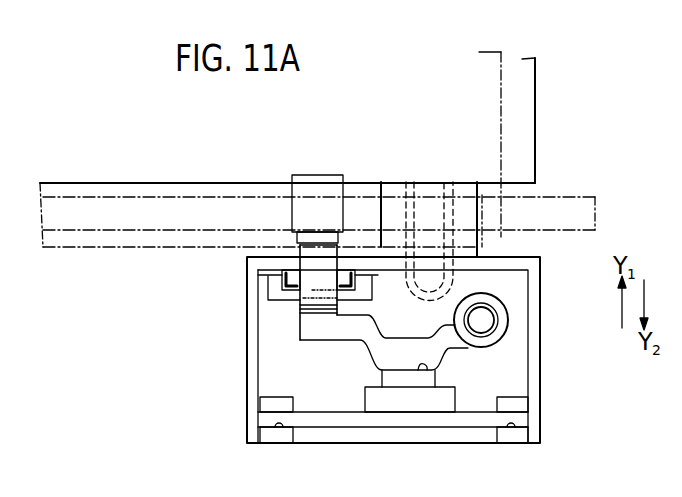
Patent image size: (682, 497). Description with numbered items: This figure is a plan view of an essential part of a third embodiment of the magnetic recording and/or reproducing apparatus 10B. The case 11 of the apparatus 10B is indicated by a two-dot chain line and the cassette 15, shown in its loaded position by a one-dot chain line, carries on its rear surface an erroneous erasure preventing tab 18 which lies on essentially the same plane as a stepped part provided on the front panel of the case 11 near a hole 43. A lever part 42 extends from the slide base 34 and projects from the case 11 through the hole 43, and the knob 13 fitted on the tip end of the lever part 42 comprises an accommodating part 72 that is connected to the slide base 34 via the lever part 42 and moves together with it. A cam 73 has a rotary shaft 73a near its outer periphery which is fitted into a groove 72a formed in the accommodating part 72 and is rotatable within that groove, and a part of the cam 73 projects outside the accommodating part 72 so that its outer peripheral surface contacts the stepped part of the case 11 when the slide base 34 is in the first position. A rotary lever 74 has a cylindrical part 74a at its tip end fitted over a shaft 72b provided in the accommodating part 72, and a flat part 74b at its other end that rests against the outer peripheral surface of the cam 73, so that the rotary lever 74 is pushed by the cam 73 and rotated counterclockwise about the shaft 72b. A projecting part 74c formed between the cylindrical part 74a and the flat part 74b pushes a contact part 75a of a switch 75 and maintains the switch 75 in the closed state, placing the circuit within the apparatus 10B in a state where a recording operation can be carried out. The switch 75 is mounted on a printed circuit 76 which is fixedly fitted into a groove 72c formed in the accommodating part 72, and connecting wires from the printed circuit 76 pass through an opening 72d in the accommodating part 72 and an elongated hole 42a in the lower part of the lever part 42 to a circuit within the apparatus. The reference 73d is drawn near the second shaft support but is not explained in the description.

The apparatus 10B is at (489, 41).
The case 11 is at (553, 193).
The knob 13 is at (246, 370).
The cassette 15 is at (110, 249).
The erroneous erasure preventing tab 18 is at (311, 232).
The slide base 34 is at (537, 92).
The lever part 42 is at (492, 236).
The elongated hole 42a is at (431, 185).
The hole 43 is at (374, 200).
The accommodating part 72 is at (535, 372).
The groove 72a is at (300, 295).
The shaft 72b is at (488, 317).
The groove 72c is at (277, 430).
The opening 72d is at (445, 281).
The cam 73 is at (302, 305).
The rotary shaft 73a is at (292, 281).
The right clip 73d is at (358, 280).
The rotary lever 74 is at (372, 353).
The cylindrical part 74a is at (503, 328).
The flat part 74b is at (318, 314).
The projecting part 74c is at (432, 371).
The switch 75 is at (405, 380).
The contact part 75a is at (387, 372).
The printed circuit 76 is at (437, 412).